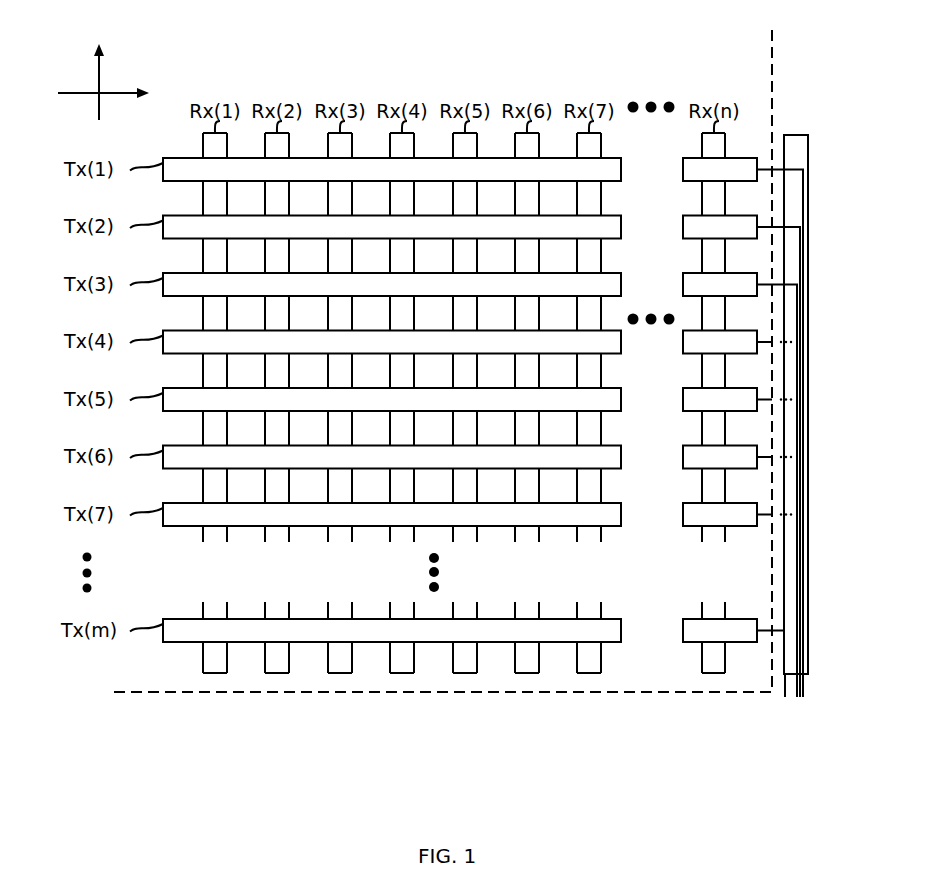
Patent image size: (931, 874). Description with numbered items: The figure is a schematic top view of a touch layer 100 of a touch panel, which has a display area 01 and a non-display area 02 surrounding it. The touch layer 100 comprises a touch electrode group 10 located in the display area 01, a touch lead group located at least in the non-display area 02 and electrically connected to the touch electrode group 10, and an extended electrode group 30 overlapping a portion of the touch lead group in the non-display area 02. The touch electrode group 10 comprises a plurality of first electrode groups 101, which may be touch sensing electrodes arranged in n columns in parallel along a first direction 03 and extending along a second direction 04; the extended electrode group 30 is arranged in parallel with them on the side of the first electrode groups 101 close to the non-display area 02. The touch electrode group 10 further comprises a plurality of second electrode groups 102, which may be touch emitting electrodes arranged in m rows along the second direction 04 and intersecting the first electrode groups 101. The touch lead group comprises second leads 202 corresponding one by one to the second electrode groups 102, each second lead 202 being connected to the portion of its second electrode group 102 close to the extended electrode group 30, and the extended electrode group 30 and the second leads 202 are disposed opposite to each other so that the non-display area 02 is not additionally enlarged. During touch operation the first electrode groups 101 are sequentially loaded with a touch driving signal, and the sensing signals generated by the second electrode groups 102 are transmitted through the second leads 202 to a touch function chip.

The touch layer 100 is at (191, 60).
The display area 01 is at (551, 70).
The non-display area 02 is at (795, 70).
The first direction 03 is at (89, 93).
The second direction 04 is at (98, 94).
The touch electrode group 10 is at (460, 478).
The first electrode group 101 is at (402, 673).
The second electrode group 102 is at (313, 642).
The second lead 202 is at (794, 166).
The extended electrode group 30 is at (793, 676).